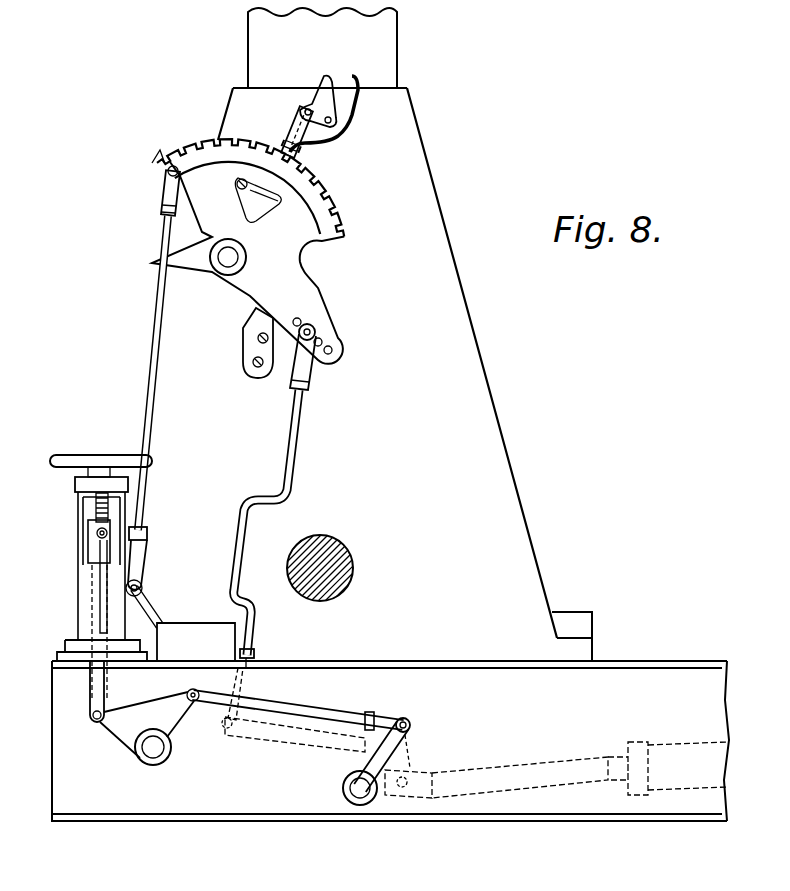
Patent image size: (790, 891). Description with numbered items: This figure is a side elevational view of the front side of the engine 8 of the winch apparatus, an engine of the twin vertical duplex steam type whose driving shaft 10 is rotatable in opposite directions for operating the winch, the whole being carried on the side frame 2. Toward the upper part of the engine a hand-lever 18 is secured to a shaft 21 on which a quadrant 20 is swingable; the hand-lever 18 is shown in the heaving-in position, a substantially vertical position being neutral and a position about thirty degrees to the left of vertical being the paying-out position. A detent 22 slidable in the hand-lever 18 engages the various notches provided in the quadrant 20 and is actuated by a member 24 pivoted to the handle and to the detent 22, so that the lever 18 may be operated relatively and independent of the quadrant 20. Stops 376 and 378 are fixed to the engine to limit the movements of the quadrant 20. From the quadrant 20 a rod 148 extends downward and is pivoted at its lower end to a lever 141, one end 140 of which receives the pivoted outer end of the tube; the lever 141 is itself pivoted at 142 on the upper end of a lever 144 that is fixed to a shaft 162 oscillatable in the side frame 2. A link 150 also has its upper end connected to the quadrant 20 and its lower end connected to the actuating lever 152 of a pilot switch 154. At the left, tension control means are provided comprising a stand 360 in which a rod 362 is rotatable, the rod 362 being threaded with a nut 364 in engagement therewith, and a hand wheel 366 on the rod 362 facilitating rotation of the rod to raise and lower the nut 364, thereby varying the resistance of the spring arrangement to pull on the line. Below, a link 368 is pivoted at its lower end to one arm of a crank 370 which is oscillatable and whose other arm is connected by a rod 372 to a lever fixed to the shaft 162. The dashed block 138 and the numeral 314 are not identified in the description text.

The side frame 2 is at (152, 800).
The engine 8 is at (484, 181).
The driving shaft 10 is at (354, 566).
The hand-lever 18 is at (333, 140).
The quadrant 20 is at (293, 235).
The shaft 21 is at (225, 262).
The detent 22 is at (293, 131).
The member 24 is at (326, 88).
The block 138 is at (621, 750).
The end of lever 140 is at (409, 758).
The lever 141 is at (283, 745).
The pivot 142 is at (357, 783).
The lever 144 is at (353, 758).
The rod 148 is at (293, 462).
The link 150 is at (158, 397).
The actuating lever 152 is at (150, 606).
The pilot switch 154 is at (211, 612).
The shaft 162 is at (360, 797).
The lever arm 314 is at (358, 763).
The stand 360 is at (93, 545).
The rod 362 is at (96, 516).
The nut 364 is at (95, 556).
The hand wheel 366 is at (106, 462).
The link 368 is at (92, 688).
The crank 370 is at (123, 727).
The rod 372 is at (343, 705).
The stop 376 is at (160, 240).
The stop 378 is at (243, 322).